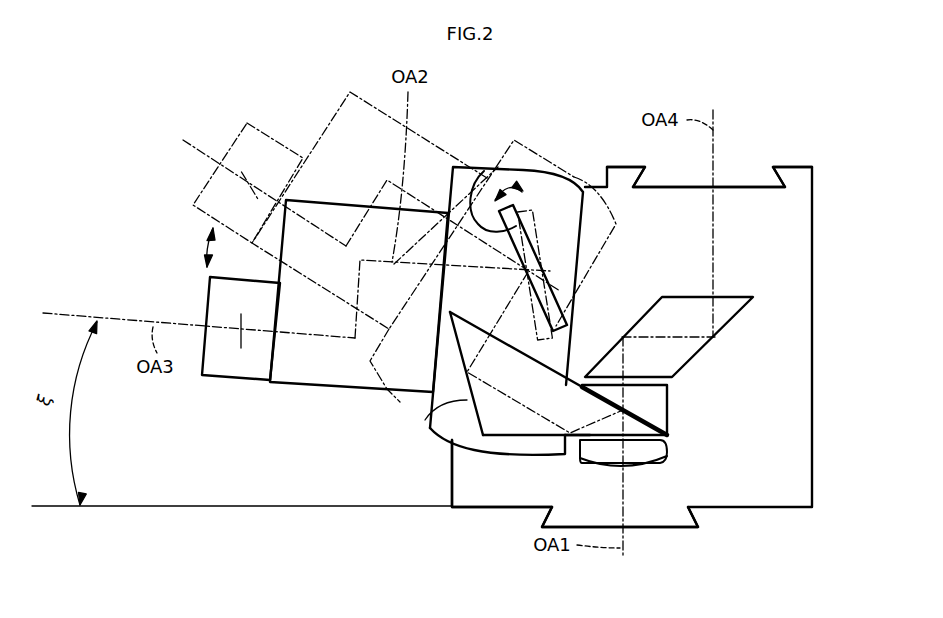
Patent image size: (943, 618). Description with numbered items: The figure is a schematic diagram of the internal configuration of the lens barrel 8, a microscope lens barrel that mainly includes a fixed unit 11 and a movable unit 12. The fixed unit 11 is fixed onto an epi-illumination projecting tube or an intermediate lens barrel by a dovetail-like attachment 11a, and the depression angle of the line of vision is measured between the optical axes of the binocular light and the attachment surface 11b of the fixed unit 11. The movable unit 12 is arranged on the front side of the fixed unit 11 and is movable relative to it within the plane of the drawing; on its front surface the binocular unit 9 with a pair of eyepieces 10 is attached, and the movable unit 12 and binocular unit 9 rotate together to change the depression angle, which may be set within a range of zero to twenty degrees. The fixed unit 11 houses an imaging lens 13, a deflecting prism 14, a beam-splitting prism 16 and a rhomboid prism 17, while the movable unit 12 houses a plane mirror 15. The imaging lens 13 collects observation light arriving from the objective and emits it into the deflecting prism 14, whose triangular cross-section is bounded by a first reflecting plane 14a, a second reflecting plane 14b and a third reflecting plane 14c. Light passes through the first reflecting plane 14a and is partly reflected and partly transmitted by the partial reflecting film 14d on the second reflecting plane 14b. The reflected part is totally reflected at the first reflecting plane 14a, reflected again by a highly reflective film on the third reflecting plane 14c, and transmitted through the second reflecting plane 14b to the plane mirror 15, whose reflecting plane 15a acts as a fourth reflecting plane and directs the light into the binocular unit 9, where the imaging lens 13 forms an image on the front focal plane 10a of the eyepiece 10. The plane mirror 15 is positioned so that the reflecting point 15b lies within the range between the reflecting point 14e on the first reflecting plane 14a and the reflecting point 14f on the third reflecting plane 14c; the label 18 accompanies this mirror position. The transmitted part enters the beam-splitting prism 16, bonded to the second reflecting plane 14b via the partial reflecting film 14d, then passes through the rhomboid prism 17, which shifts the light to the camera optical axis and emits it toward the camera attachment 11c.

The lens barrel 8 is at (803, 122).
The binocular unit 9 is at (313, 393).
The eyepiece 10 is at (210, 348).
The front focal plane 10a is at (233, 317).
The fixed unit 11 is at (662, 363).
The attachment 11a is at (671, 530).
The attachment surface 11b is at (470, 510).
The camera attachment 11c is at (747, 187).
The movable unit 12 is at (523, 168).
The imaging lens 13 is at (668, 453).
The deflecting prism 14 is at (542, 402).
The first reflecting plane 14a is at (509, 438).
The second reflecting plane 14b is at (552, 368).
The third reflecting plane 14c is at (448, 437).
The partial reflecting film 14d is at (628, 414).
The reflecting point 14e is at (570, 438).
The reflecting point 14f is at (462, 373).
The plane mirror 15 is at (578, 273).
The reflecting plane 15a is at (484, 178).
The reflecting point 15b is at (565, 232).
The mirror in alternate position 18 is at (540, 258).
The beam-splitting prism 16 is at (670, 387).
The rhomboid prism 17 is at (740, 323).